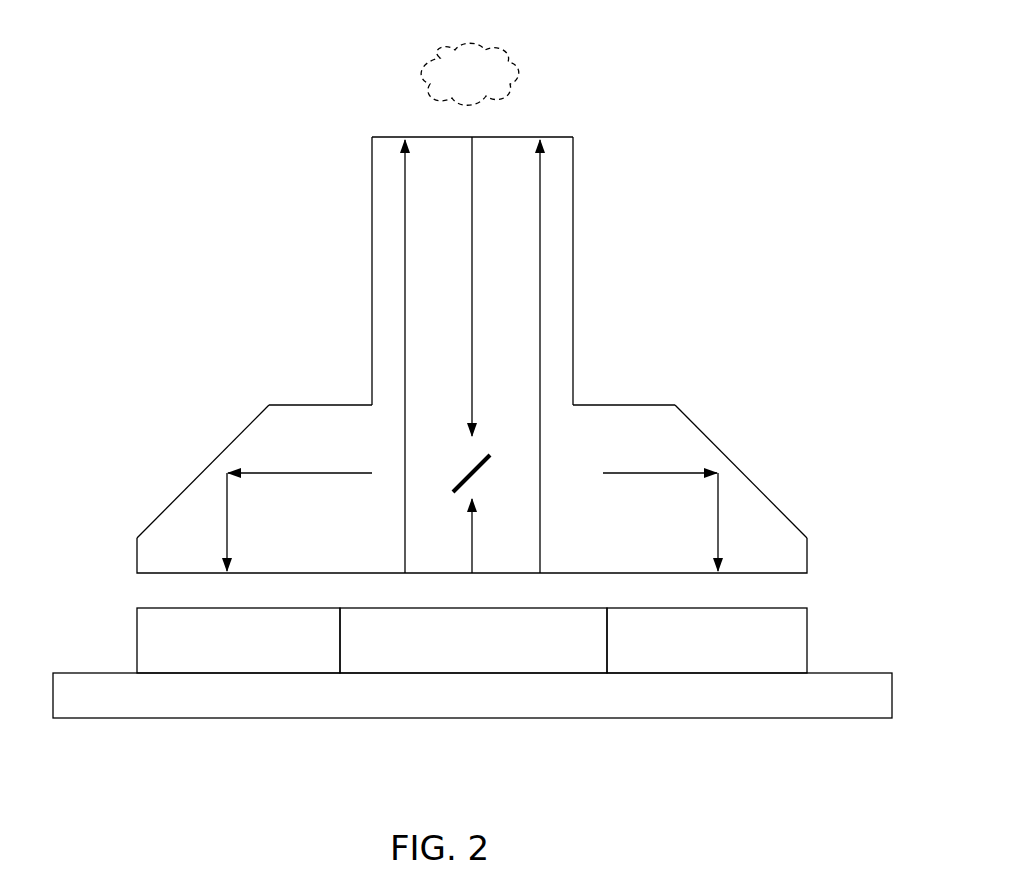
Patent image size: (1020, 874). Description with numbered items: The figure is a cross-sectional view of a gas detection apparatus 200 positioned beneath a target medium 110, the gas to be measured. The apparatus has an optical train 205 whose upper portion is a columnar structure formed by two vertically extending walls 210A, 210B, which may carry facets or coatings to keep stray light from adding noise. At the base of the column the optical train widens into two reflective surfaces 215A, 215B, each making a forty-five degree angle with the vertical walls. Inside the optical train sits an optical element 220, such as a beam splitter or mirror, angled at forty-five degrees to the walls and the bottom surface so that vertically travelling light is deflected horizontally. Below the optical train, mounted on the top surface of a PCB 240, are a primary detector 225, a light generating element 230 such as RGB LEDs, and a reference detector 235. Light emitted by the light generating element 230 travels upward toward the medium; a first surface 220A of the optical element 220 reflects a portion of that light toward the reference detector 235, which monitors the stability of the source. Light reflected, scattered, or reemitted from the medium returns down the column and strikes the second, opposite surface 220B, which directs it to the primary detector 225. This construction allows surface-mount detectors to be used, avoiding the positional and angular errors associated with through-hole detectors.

The target medium 110 is at (520, 62).
The gas detection apparatus 200 is at (310, 72).
The optical train 205 is at (372, 262).
The vertically extending wall 210A is at (372, 172).
The vertically extending wall 210B is at (573, 167).
The reflective surface 215A is at (218, 456).
The reflective surface 215B is at (728, 458).
The optical element 220 is at (476, 477).
The first surface of optical element 220A is at (484, 494).
The second surface of optical element 220B is at (461, 462).
The primary detector 225 is at (137, 640).
The light generating element 230 is at (346, 673).
The reference detector 235 is at (809, 643).
The PCB 240 is at (784, 718).